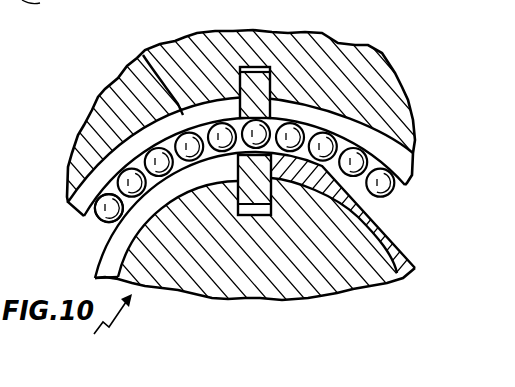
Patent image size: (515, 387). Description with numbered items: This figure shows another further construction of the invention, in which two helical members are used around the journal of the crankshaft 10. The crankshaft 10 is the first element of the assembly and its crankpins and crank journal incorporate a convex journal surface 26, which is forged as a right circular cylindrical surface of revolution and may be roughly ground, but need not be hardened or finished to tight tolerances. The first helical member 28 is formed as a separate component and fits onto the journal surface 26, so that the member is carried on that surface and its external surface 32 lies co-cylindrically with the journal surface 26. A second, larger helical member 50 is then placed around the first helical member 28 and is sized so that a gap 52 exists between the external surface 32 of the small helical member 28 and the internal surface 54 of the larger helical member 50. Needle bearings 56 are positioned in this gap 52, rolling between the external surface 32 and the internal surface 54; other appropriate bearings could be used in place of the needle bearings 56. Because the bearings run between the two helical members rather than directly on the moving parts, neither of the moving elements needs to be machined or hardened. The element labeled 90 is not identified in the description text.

The crankshaft 10 is at (99, 329).
The journal surface 26 is at (188, 278).
The helical member 28 is at (112, 250).
The external surface 32 is at (94, 277).
The second helical member 50 is at (143, 56).
The gap 52 is at (101, 223).
The internal surface 54 is at (105, 176).
The needle bearings 56 is at (323, 135).
The housing 90 is at (0, 22).